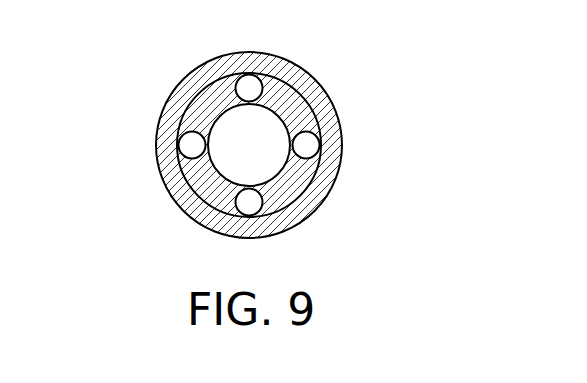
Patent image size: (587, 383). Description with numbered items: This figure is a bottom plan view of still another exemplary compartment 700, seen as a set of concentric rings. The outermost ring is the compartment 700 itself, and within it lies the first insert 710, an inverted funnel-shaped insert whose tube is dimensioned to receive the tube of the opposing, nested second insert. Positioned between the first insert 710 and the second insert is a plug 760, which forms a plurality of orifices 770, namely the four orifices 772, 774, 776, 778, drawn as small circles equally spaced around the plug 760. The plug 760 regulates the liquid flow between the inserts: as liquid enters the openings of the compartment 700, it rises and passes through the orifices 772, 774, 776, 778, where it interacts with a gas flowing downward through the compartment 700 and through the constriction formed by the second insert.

The compartment 700 is at (194, 72).
The first insert 710 is at (195, 212).
The plug 760 is at (287, 103).
The orifices 770 is at (133, 195).
The orifice 772 is at (190, 147).
The orifice 774 is at (250, 83).
The orifice 776 is at (308, 144).
The orifice 778 is at (247, 207).